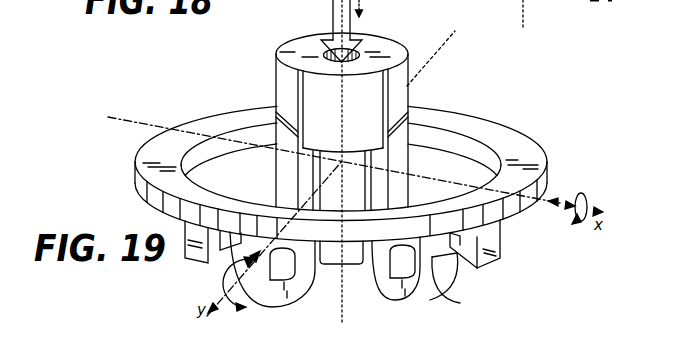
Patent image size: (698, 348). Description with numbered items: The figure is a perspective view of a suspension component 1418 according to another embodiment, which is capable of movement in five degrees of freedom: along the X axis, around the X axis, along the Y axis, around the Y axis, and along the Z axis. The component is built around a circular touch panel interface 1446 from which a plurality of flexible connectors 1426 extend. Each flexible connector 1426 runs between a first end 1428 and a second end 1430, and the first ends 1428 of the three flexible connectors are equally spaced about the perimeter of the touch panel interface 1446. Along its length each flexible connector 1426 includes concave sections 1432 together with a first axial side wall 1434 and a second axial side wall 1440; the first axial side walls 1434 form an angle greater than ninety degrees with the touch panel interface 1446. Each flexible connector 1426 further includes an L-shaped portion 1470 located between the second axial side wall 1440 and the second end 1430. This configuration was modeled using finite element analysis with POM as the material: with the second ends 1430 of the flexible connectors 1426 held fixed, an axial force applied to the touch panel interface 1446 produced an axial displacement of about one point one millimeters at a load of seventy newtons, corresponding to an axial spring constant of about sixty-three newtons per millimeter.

The suspension component 1418 is at (528, 110).
The touch panel interface 1446 is at (303, 47).
The first ends 1428 is at (399, 68).
The flexible connectors 1426 is at (412, 136).
The first axial side walls 1434 is at (399, 164).
The L-shaped portion 1470 is at (210, 257).
The concave sections 1432 is at (414, 289).
The second axial side wall 1440 is at (432, 268).
The second ends 1430 is at (481, 243).